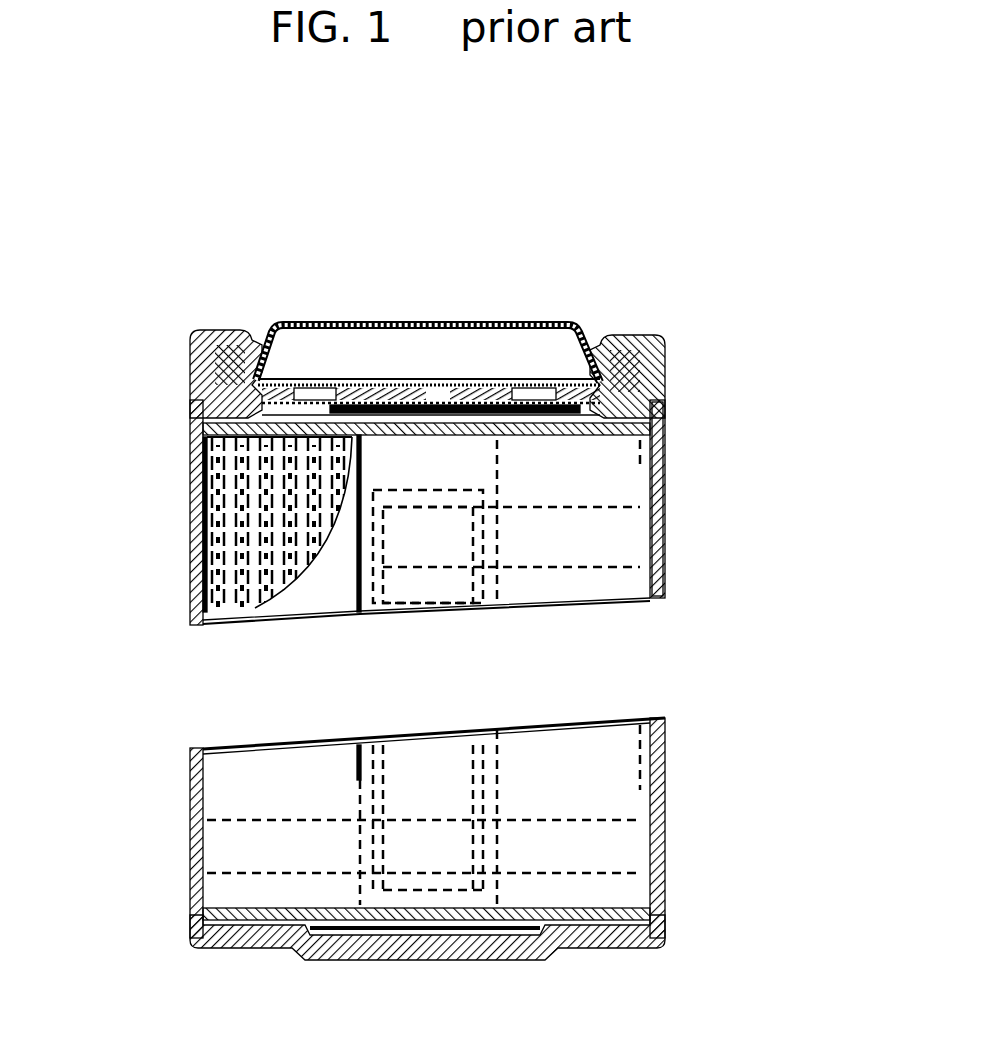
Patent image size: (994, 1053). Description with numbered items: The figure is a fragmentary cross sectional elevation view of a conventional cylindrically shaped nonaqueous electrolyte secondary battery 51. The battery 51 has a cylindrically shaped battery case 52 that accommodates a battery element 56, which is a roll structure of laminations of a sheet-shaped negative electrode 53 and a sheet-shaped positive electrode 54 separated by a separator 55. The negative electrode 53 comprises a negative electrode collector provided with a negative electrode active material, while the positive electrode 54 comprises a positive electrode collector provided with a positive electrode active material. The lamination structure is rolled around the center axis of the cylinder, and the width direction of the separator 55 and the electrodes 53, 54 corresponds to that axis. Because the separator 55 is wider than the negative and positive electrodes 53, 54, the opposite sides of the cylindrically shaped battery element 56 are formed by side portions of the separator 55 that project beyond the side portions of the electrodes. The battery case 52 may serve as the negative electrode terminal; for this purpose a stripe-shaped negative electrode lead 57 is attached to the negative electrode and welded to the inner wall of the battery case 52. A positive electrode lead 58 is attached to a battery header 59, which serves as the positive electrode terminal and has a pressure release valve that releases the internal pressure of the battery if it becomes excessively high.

The battery 51 is at (133, 372).
The battery case 52 is at (665, 547).
The negative electrode 53 is at (190, 523).
The positive electrode 54 is at (190, 593).
The separator 55 is at (190, 443).
The battery element 56 is at (573, 588).
The negative electrode lead 57 is at (665, 463).
The positive electrode lead 58 is at (313, 380).
The battery header 59 is at (430, 323).